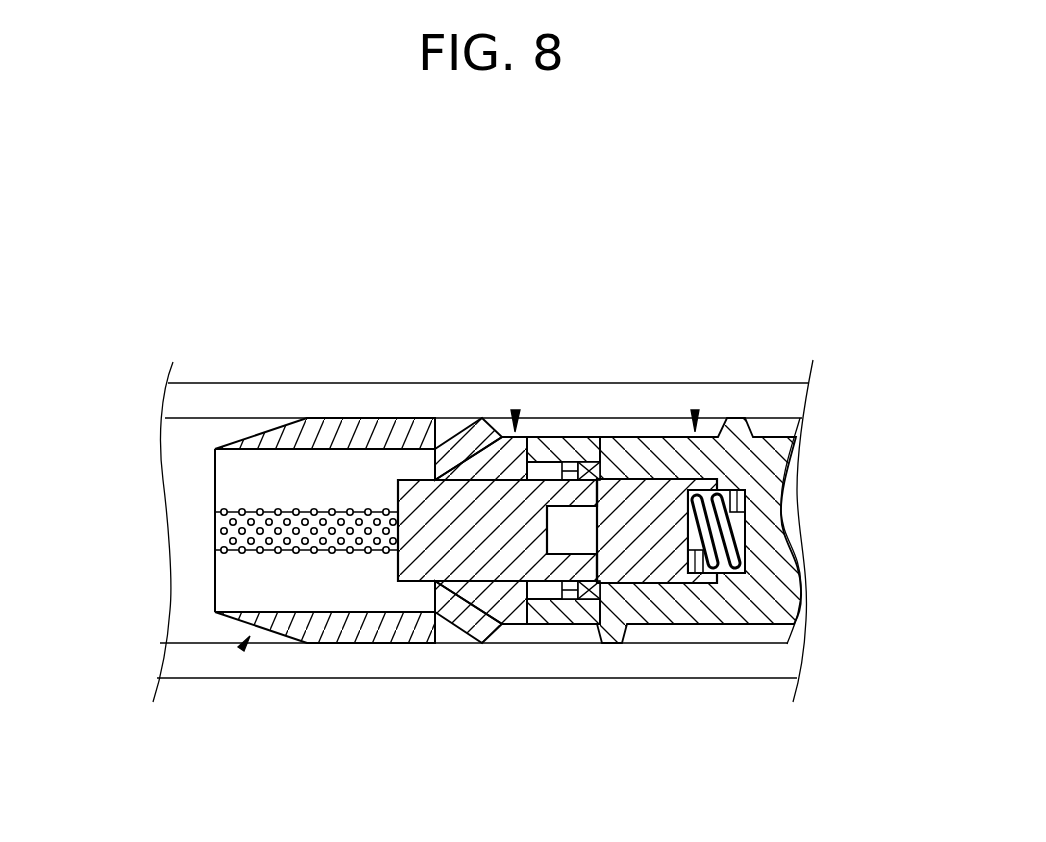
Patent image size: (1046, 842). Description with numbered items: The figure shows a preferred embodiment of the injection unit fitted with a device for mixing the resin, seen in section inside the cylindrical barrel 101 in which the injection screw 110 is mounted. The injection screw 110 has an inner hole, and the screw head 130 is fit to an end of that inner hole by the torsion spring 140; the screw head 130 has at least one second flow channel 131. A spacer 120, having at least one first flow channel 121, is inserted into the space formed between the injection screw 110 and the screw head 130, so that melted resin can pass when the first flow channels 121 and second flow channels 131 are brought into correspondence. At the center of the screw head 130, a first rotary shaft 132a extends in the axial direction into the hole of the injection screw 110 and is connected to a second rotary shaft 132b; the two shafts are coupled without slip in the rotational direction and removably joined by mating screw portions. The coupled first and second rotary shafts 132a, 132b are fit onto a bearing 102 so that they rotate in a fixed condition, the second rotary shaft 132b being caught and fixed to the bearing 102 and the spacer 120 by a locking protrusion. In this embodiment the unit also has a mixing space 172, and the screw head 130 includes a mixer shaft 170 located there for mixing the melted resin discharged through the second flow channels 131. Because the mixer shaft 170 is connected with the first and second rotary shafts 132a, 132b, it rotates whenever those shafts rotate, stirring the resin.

The barrel 101 is at (248, 383).
The injection screw 110 is at (694, 410).
The spacer 120 is at (515, 410).
The first flow channels 121 is at (460, 457).
The screw head 130 is at (243, 647).
The second flow channels 131 is at (423, 460).
The first rotary shaft 132a is at (492, 548).
The second rotary shaft 132b is at (637, 545).
The torsion spring 140 is at (738, 533).
The mixer shaft 170 is at (218, 536).
The mixing space 172 is at (375, 583).
The bearing 102 is at (586, 462).